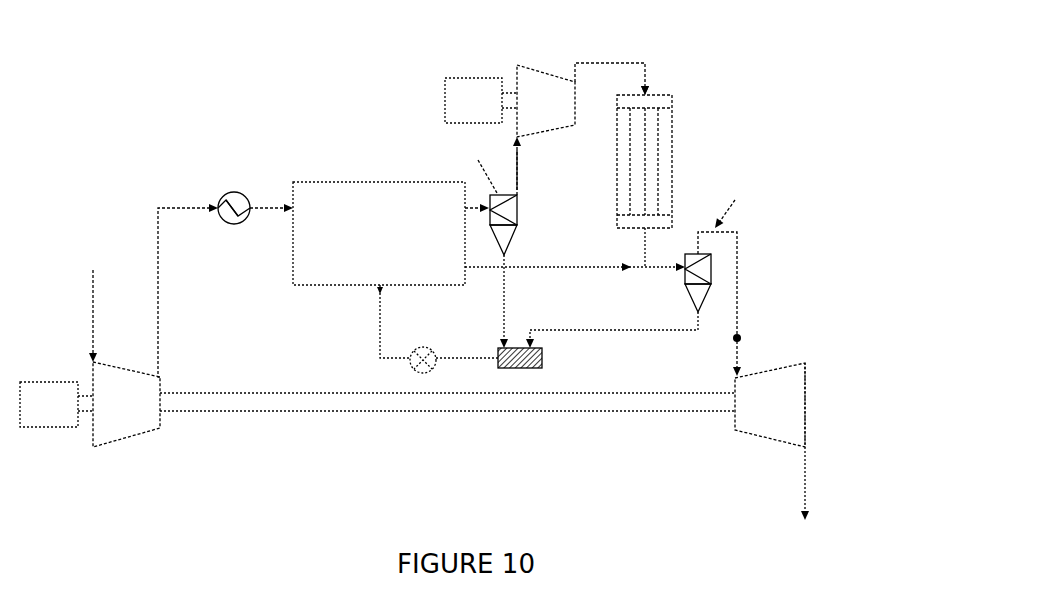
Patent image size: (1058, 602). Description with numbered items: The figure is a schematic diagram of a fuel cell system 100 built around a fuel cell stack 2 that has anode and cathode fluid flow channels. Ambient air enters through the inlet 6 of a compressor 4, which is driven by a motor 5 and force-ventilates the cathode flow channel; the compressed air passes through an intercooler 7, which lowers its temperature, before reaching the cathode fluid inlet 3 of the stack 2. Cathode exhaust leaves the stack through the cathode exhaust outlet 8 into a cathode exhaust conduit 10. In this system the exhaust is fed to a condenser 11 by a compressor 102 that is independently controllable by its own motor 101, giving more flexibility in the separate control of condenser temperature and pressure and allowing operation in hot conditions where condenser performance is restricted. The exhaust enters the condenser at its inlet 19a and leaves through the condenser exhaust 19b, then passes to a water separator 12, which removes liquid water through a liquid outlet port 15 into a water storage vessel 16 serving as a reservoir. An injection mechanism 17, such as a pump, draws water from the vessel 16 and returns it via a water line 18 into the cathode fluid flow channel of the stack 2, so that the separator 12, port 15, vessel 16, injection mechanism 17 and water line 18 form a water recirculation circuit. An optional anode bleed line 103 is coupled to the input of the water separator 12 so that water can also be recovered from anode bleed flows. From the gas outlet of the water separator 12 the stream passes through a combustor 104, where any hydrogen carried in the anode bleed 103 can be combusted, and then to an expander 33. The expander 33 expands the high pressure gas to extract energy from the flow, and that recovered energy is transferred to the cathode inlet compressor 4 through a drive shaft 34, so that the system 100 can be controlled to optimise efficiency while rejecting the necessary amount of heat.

The fuel cell system 100 is at (459, 265).
The fuel cell stack 2 is at (333, 182).
The cathode fluid inlet 3 is at (267, 202).
The compressor 4 is at (130, 430).
The motor 5 is at (44, 426).
The inlet 6 is at (92, 307).
The intercooler 7 is at (236, 226).
The cathode exhaust outlet 8 is at (470, 208).
The cathode exhaust conduit 10 is at (522, 185).
The condenser 11 is at (668, 148).
The water separator 12 is at (712, 265).
The liquid outlet port 15 is at (690, 303).
The water storage vessel 16 is at (545, 358).
The injection mechanism 17 is at (430, 345).
The water line 18 is at (380, 310).
The condenser inlet 19a is at (652, 83).
The condenser exhaust 19b is at (642, 228).
The expander 33 is at (793, 399).
The drive shaft 34 is at (257, 403).
The motor 101 is at (464, 87).
The compressor 102 is at (535, 80).
The anode bleed line 103 is at (575, 289).
The combustor 104 is at (739, 345).